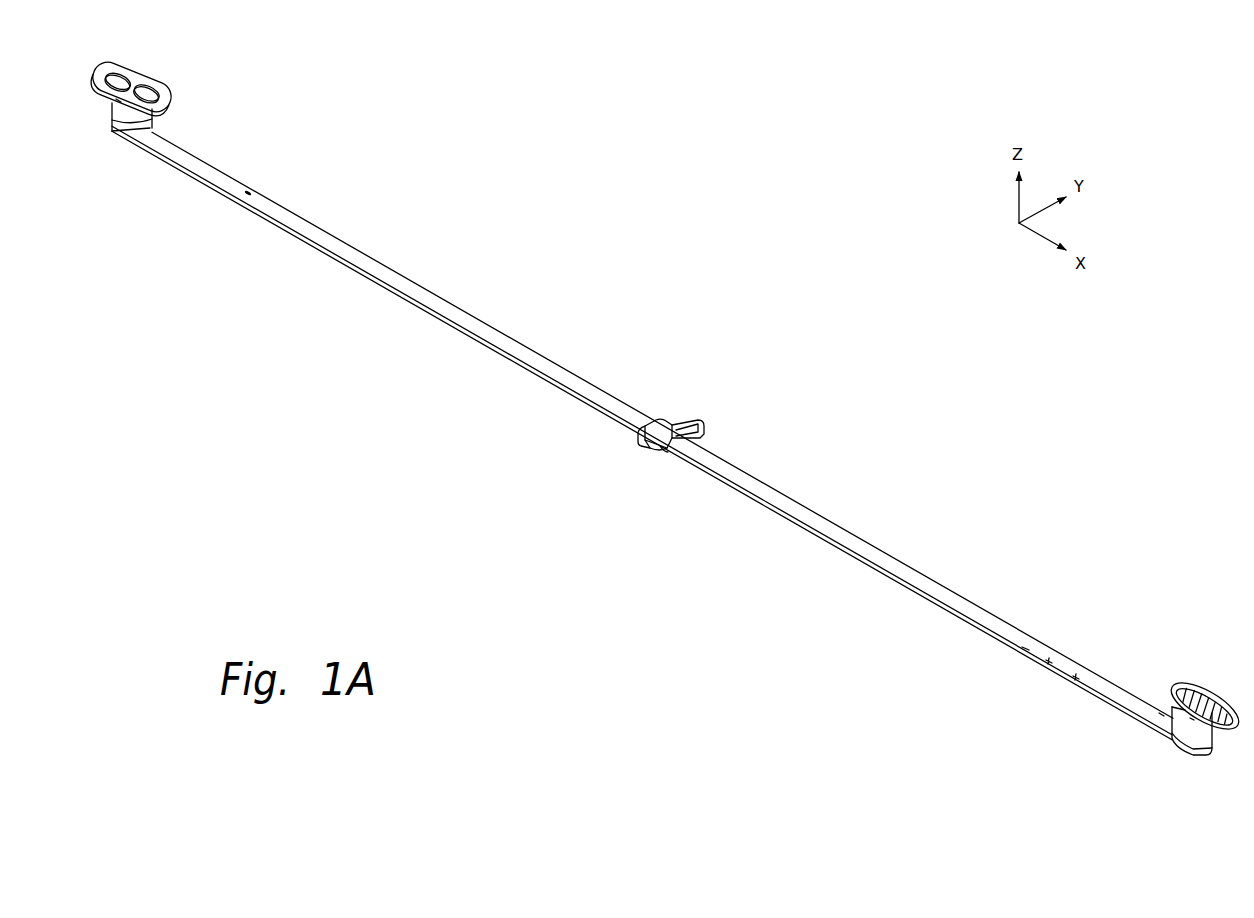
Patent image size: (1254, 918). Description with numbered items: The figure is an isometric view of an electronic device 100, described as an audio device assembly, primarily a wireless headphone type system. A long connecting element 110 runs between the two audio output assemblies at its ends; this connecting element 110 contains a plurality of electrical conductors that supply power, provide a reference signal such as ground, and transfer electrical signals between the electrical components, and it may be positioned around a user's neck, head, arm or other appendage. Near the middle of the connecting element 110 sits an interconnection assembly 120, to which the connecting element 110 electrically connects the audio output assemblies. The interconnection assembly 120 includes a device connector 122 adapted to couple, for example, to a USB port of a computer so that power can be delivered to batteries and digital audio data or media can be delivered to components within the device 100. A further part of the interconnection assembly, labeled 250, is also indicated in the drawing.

The electronic device 100 is at (360, 546).
The connecting element 110 is at (470, 358).
The interconnection assembly 120 is at (628, 459).
The device connector 122 is at (718, 402).
The clamp latch 250 is at (664, 456).